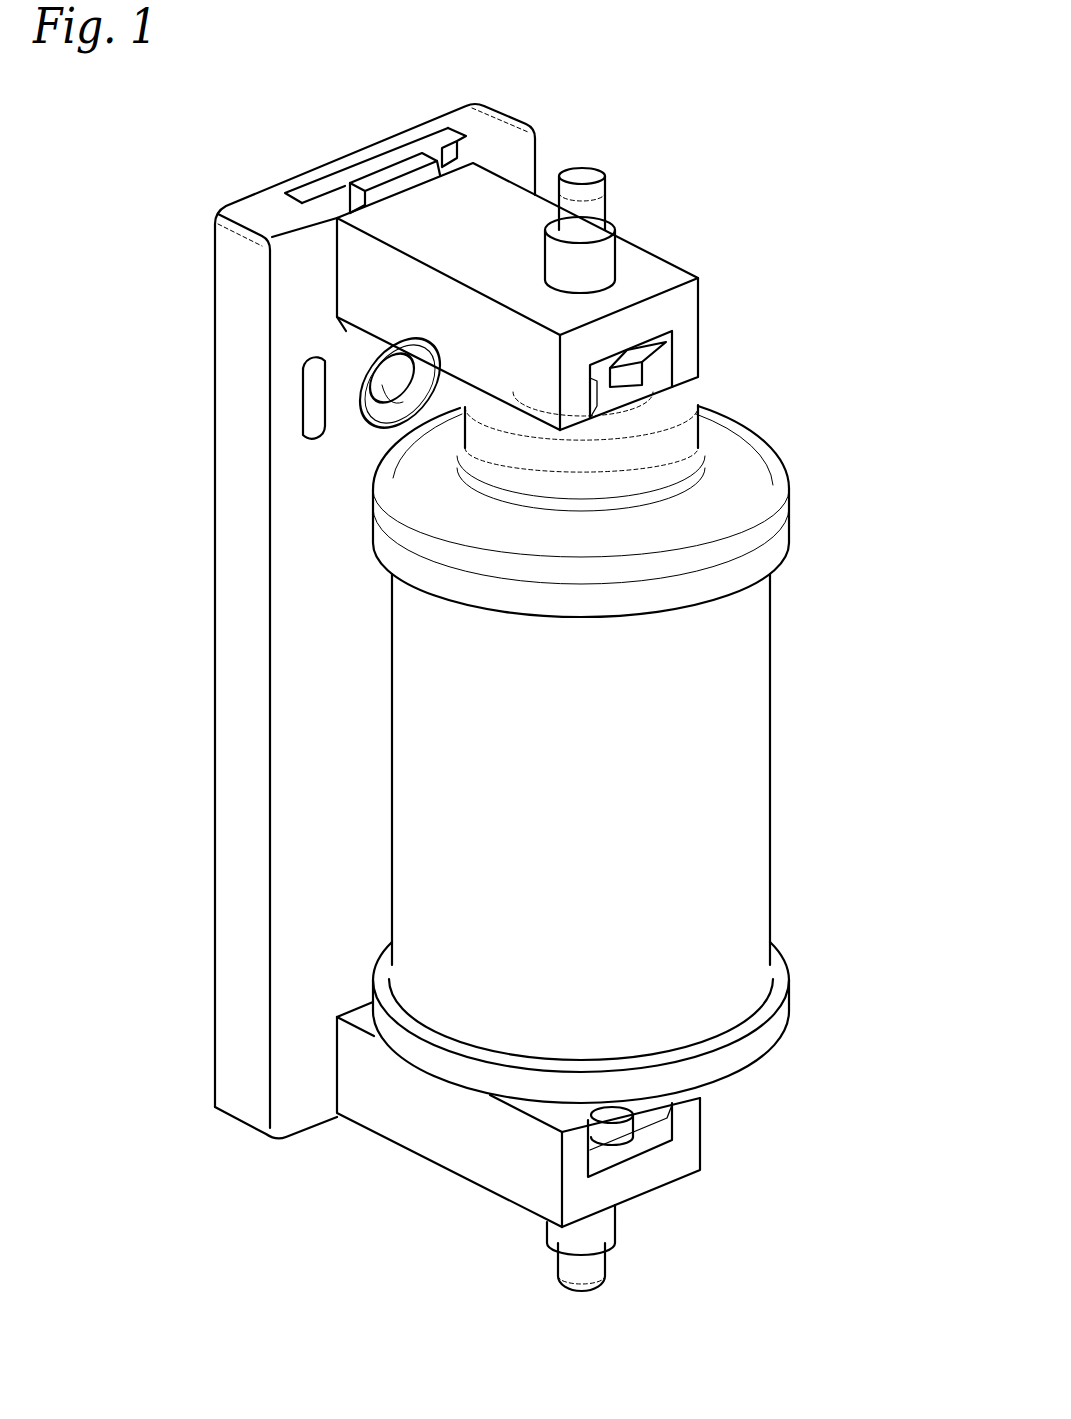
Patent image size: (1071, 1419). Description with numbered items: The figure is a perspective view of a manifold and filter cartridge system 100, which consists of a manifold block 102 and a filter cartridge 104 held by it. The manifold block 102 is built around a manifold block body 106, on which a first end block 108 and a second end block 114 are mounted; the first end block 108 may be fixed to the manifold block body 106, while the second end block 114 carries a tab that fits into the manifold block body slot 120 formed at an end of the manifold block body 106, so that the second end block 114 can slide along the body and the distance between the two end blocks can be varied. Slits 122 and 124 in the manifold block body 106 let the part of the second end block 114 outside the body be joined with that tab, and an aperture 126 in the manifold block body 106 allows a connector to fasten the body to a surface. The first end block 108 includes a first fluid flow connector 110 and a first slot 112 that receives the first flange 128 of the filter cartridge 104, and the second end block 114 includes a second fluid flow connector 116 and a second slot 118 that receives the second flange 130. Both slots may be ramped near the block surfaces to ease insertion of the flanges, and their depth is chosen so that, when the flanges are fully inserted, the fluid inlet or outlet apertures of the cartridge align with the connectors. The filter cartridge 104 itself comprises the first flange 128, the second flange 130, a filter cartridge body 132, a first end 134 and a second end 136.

The manifold and filter cartridge system 100 is at (506, 689).
The manifold block 102 is at (441, 702).
The filter cartridge 104 is at (645, 799).
The manifold block body 106 is at (343, 604).
The first end block 108 is at (566, 1168).
The first fluid flow connector 110 is at (592, 1292).
The first slot 112 is at (655, 1118).
The second end block 114 is at (573, 269).
The second fluid flow connector 116 is at (598, 182).
The second slot 118 is at (672, 350).
The manifold block body slot 120 is at (383, 163).
The slit 122 is at (348, 182).
The slit 124 is at (452, 167).
The aperture 126 is at (372, 402).
The first flange 128 is at (632, 1140).
The second flange 130 is at (692, 383).
The filter cartridge body 132 is at (740, 820).
The first end 134 is at (770, 1045).
The second end 136 is at (778, 535).